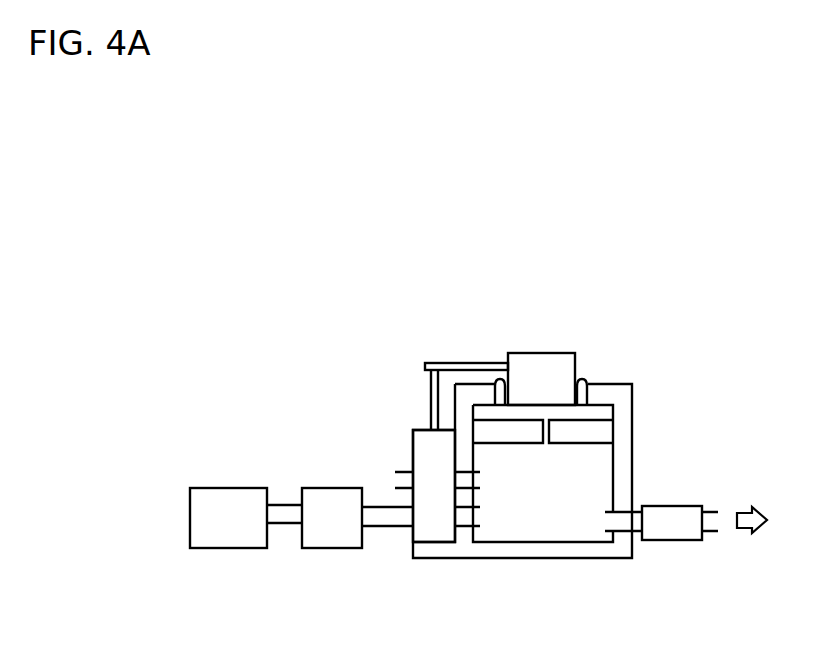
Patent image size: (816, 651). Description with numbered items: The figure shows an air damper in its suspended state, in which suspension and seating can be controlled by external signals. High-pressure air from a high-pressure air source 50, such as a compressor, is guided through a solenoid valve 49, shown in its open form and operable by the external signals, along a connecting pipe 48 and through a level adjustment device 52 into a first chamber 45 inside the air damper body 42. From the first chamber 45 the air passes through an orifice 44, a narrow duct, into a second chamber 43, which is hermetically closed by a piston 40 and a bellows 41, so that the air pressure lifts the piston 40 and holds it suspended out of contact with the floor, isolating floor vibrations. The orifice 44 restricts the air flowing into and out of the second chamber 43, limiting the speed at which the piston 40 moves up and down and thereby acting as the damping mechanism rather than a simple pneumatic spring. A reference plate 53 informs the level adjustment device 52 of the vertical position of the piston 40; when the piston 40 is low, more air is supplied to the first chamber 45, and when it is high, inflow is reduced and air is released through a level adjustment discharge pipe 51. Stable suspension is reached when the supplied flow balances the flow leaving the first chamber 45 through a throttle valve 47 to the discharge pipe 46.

The piston 40 is at (530, 353).
The bellows 41 is at (588, 382).
The air damper body 42 is at (632, 403).
The second chamber 43 is at (603, 413).
The orifice 44 is at (550, 430).
The first chamber 45 is at (603, 475).
The discharge pipe 46 is at (708, 533).
The throttle valve 47 is at (655, 541).
The inlet pipe 48 is at (385, 527).
The solenoid valve 49 is at (335, 549).
The high-pressure air source 50 is at (228, 548).
The level adjustment discharge pipe 51 is at (400, 482).
The level adjustment device 52 is at (423, 440).
The reference plate 53 is at (438, 363).